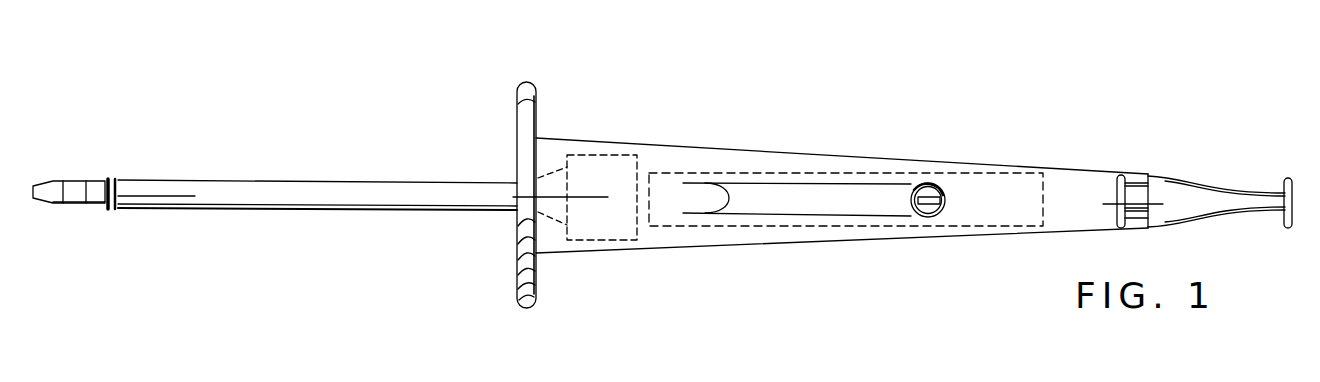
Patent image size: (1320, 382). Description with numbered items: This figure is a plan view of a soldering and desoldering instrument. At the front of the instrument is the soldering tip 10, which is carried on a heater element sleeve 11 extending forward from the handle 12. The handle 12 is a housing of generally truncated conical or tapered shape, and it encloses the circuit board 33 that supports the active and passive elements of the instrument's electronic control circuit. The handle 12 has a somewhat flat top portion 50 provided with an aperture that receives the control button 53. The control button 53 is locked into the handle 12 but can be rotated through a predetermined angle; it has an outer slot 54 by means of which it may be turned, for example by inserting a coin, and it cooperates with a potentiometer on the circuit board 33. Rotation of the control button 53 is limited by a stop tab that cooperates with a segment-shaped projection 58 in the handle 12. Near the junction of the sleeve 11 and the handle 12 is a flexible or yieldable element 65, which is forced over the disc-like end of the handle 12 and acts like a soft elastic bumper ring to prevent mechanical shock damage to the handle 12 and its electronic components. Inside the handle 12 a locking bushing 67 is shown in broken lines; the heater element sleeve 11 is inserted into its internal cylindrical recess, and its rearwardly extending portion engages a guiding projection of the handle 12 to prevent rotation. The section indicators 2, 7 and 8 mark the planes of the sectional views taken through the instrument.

The section line 2- 2 is at (73, 164).
The section line 7- 7 is at (584, 196).
The section line 8- 8 is at (928, 113).
The soldering tip 10 is at (62, 207).
The heater element sleeve 11 is at (190, 216).
The handle 12 is at (1046, 246).
The circuit board 33 is at (792, 226).
The flat top portion 50 is at (792, 208).
The control button 53 is at (930, 188).
The outer slot 54 is at (943, 209).
The segment-shaped projection 58 is at (946, 189).
The flexible element 65 is at (517, 277).
The locking bushing 67 is at (598, 244).